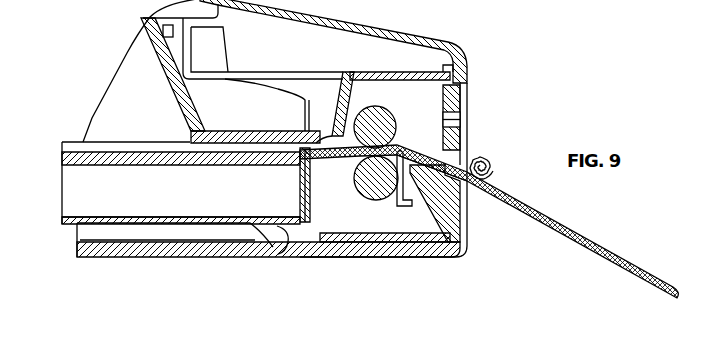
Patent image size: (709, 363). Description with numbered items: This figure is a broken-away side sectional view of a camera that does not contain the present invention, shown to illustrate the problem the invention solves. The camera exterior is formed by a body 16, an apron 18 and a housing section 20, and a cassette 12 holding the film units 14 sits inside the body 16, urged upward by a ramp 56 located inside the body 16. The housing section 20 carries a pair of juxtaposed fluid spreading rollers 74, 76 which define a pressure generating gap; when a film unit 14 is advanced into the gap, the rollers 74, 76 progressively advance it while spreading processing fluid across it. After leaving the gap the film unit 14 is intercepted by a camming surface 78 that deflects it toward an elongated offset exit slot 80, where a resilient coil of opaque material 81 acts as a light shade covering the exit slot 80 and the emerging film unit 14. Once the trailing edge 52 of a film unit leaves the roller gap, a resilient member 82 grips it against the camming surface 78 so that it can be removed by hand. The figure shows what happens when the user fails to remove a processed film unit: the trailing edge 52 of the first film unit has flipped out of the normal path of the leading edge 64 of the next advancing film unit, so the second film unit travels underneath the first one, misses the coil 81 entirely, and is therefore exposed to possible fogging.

The cassette 12 is at (310, 212).
The film unit 14 is at (187, 168).
The body 16 is at (69, 0).
The apron 18 is at (381, 28).
The housing section 20 is at (476, 246).
The trailing edge 52 is at (399, 123).
The ramp 56 is at (135, 236).
The leading edge 64 is at (404, 188).
The fluid spreading roller 74 is at (371, 112).
The fluid spreading roller 76 is at (378, 196).
The camming surface 78 is at (410, 144).
The exit slot 80 is at (475, 214).
The coil of opaque material 81 is at (494, 159).
The resilient member 82 is at (416, 173).